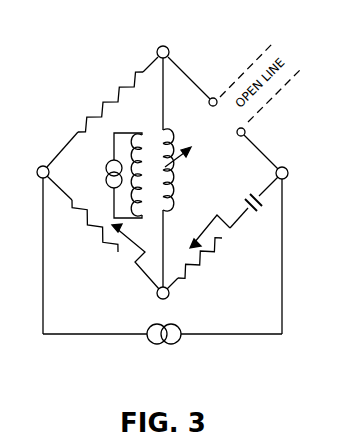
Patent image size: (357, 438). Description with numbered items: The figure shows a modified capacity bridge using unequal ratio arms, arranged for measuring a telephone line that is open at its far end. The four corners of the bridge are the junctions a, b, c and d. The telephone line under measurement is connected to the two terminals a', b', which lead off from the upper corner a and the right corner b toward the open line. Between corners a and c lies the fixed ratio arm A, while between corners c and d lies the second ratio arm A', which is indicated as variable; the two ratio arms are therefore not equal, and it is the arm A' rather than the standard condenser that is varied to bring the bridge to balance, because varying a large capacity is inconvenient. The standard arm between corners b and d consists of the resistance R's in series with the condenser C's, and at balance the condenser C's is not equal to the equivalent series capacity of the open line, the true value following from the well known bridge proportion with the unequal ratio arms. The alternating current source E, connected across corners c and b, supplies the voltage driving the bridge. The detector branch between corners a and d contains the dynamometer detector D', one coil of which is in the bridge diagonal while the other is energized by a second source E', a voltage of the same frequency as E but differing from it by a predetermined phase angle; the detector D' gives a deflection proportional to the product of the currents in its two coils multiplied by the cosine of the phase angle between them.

The bridge corner a is at (163, 43).
The line terminal a' is at (194, 81).
The bridge corner b is at (289, 172).
The line terminal b' is at (257, 144).
The bridge corner c is at (39, 178).
The bridge corner d is at (167, 297).
The ratio arm A is at (102, 112).
The variable ratio arm A' is at (103, 232).
The alternating current source E is at (164, 343).
The second voltage source E' is at (116, 175).
The dynamometer detector D' is at (177, 172).
The standard condenser C's is at (254, 204).
The standard resistance R's is at (198, 252).